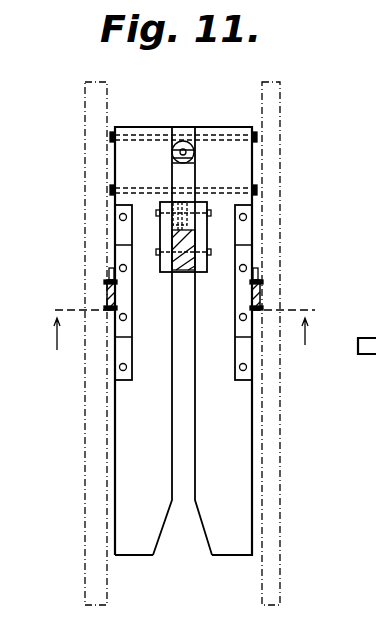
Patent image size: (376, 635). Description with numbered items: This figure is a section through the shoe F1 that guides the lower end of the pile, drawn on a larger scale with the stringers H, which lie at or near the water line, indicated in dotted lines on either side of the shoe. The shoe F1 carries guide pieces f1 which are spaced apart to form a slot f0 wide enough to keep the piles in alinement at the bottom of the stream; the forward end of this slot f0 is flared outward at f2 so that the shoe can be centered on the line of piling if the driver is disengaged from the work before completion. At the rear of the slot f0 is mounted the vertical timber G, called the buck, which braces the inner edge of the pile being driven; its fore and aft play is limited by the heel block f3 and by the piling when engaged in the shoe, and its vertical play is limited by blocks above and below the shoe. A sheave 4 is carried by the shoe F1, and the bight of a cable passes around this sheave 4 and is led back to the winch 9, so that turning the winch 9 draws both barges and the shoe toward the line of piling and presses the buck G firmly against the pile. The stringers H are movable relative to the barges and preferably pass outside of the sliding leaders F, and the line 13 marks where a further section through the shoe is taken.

The stringers H is at (85, 125).
The heel block f3 is at (184, 132).
The slot f0 is at (190, 467).
The sheave 4 is at (195, 156).
The buck G is at (195, 245).
The winch 9 is at (178, 212).
The shoe F1 is at (252, 352).
The sliding leaders F is at (107, 292).
The section line 13 is at (184, 324).
The guide pieces f1 is at (240, 443).
The flared forward end f2 is at (160, 540).